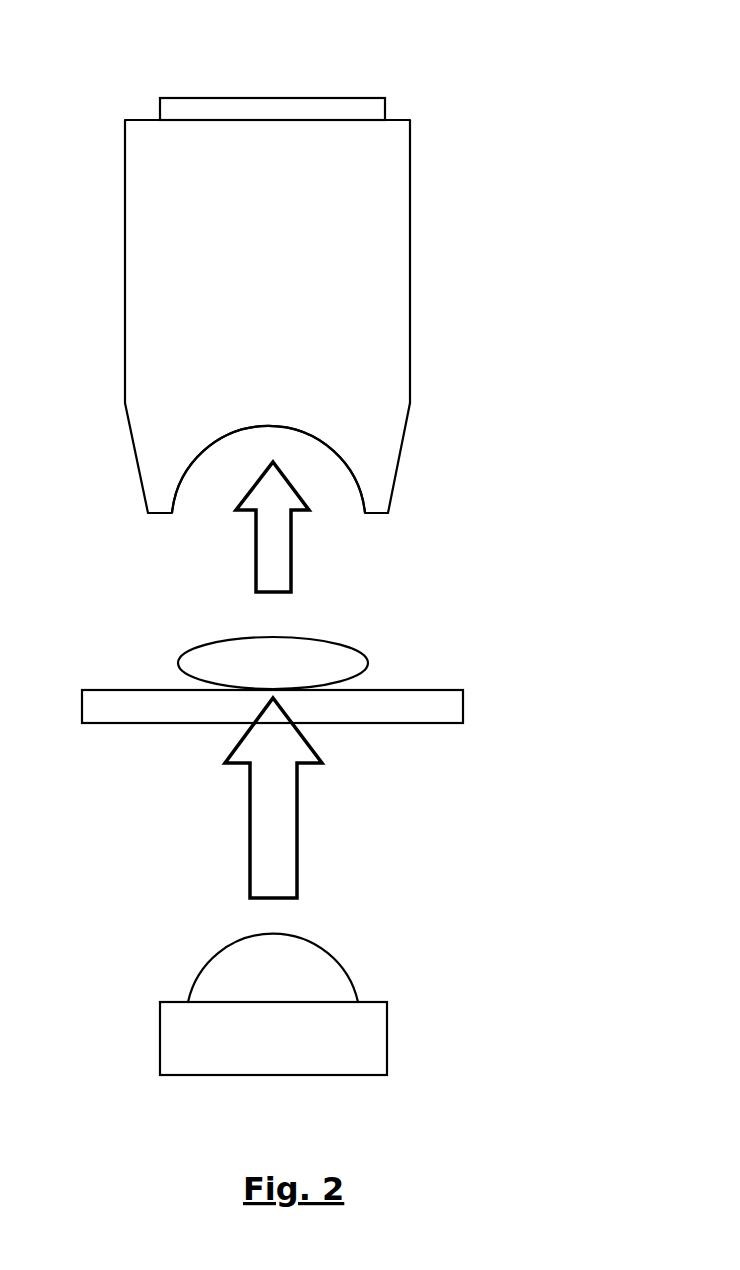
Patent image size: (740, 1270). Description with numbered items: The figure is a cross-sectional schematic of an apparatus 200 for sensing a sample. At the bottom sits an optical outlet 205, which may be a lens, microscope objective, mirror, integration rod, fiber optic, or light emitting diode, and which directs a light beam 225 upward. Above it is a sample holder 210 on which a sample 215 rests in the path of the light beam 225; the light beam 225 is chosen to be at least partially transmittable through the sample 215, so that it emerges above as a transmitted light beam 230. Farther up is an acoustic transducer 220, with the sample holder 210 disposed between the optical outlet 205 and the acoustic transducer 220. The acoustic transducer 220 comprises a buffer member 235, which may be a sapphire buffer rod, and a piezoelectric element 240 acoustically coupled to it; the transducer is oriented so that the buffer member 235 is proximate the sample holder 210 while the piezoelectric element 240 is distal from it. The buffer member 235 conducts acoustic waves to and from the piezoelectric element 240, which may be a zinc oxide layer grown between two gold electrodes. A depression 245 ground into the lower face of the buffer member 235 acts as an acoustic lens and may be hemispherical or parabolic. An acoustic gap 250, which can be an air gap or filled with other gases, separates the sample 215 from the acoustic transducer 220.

The apparatus 200 is at (524, 61).
The optical outlet 205 is at (358, 980).
The sample holder 210 is at (463, 705).
The sample 215 is at (368, 658).
The acoustic transducer 220 is at (410, 210).
The light beam 225 is at (297, 827).
The transmitted light beam 230 is at (293, 560).
The buffer member 235 is at (375, 300).
The piezoelectric element 240 is at (385, 104).
The depression 245 is at (330, 440).
The acoustic gap 250 is at (223, 558).